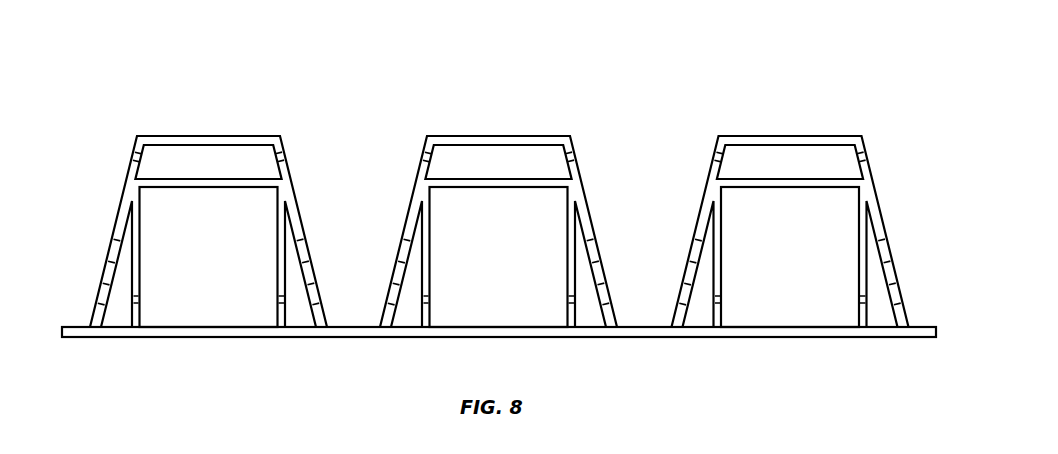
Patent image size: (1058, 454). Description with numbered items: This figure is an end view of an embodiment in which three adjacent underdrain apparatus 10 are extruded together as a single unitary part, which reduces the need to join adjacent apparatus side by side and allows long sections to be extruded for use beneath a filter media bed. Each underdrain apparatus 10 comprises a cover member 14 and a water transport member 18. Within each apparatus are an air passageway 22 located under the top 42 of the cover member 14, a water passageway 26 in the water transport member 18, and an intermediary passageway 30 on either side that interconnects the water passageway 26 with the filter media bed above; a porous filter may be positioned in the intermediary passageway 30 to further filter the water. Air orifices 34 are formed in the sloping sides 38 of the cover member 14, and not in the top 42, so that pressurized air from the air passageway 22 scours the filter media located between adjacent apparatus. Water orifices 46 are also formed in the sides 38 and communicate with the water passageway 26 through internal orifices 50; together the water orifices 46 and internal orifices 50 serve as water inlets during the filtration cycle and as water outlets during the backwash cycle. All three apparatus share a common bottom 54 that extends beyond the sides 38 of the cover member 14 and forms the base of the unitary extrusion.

The underdrain apparatus 10 is at (193, 85).
The cover member 14 is at (149, 134).
The water transport member 18 is at (143, 232).
The air passageway 22 is at (222, 168).
The water passageway 26 is at (222, 258).
The intermediary passageway 30 is at (129, 321).
The air orifices 34 is at (425, 158).
The sides 38 is at (412, 214).
The top 42 is at (512, 135).
The water orifices 46 is at (405, 269).
The internal orifices 50 is at (432, 300).
The bottom 54 is at (617, 338).